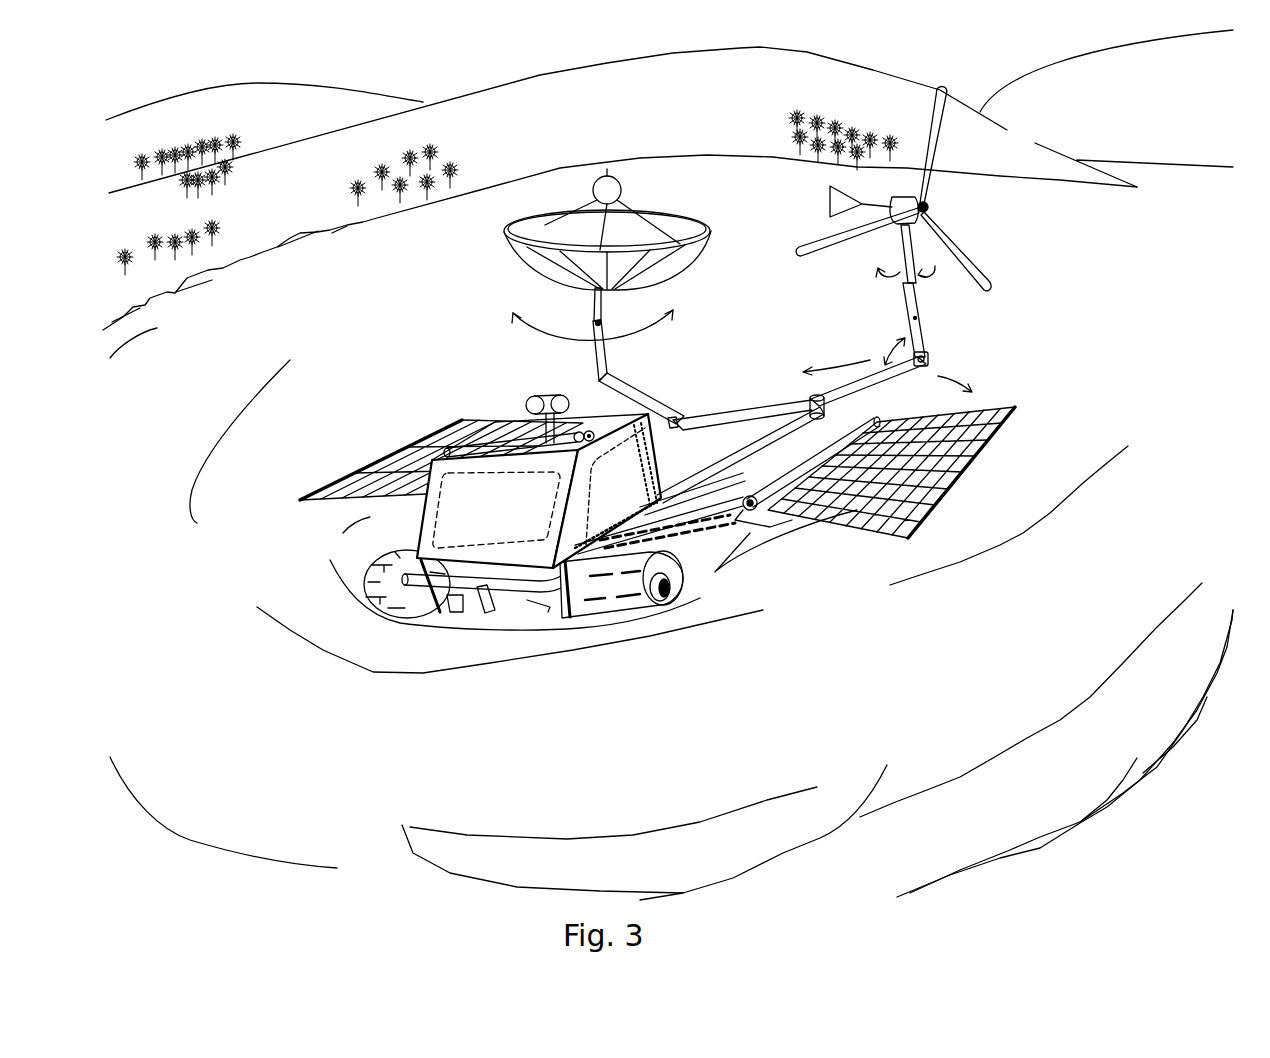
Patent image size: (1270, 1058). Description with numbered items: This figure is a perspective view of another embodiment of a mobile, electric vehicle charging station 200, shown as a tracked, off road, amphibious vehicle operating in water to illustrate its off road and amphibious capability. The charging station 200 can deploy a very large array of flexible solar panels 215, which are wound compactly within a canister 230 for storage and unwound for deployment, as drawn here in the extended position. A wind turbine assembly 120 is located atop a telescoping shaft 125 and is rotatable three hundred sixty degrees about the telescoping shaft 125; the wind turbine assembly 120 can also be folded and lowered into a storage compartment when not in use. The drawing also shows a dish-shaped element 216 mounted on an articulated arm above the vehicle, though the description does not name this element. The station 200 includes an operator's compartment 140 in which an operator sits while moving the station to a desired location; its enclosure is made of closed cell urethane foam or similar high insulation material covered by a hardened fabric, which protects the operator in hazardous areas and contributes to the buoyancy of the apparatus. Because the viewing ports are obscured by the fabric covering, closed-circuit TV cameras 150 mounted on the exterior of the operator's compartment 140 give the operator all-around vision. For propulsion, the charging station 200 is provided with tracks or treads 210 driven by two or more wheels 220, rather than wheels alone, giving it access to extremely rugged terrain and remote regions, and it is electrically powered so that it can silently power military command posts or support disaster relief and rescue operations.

The wind turbine assembly 120 is at (927, 205).
The telescoping shaft 125 is at (907, 309).
The operator's compartment 140 is at (423, 537).
The closed-circuit TV cameras 150 is at (533, 404).
The mobile electric vehicle charging station 200 is at (346, 297).
The tracks or treads 210 is at (733, 528).
The flexible solar panels 215 is at (993, 407).
The dish antenna 216 is at (663, 217).
The wheels 220 is at (690, 590).
The canister 230 is at (837, 413).